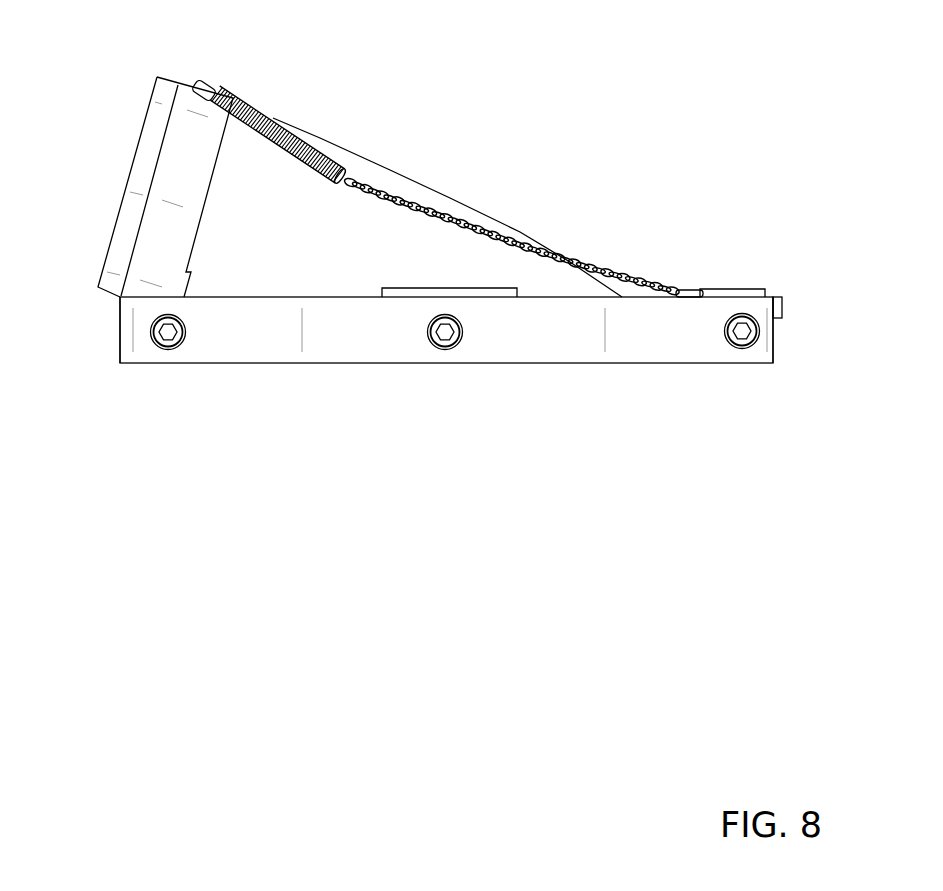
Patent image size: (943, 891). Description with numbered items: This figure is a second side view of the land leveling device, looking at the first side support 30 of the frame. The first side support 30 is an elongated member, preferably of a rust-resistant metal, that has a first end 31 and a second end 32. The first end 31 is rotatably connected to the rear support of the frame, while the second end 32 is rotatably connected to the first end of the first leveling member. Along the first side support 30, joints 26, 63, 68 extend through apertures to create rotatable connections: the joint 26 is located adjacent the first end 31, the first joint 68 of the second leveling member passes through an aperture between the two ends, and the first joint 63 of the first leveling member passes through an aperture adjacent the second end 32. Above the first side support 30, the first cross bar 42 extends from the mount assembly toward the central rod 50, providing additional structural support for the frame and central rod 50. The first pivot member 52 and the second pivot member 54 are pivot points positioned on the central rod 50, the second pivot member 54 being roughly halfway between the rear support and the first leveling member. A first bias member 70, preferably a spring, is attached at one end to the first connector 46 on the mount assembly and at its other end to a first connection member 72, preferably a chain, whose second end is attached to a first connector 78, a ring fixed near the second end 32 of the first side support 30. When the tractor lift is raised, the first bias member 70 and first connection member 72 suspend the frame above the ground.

The joint 26 is at (158, 348).
The first side support 30 is at (335, 366).
The first end 31 is at (118, 333).
The second end 32 is at (776, 341).
The first cross bar 42 is at (402, 180).
The first connector 46 is at (200, 84).
The central rod 50 is at (783, 306).
The first pivot member 52 is at (385, 289).
The second pivot member 54 is at (733, 289).
The first joint 63 is at (737, 344).
The first joint 68 is at (434, 350).
The first bias member 70 is at (306, 166).
The first connection member 72 is at (494, 241).
The first connector 78 is at (695, 289).